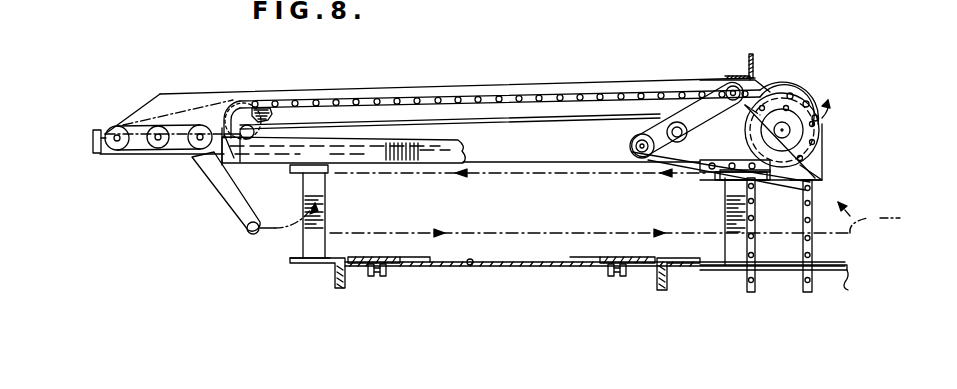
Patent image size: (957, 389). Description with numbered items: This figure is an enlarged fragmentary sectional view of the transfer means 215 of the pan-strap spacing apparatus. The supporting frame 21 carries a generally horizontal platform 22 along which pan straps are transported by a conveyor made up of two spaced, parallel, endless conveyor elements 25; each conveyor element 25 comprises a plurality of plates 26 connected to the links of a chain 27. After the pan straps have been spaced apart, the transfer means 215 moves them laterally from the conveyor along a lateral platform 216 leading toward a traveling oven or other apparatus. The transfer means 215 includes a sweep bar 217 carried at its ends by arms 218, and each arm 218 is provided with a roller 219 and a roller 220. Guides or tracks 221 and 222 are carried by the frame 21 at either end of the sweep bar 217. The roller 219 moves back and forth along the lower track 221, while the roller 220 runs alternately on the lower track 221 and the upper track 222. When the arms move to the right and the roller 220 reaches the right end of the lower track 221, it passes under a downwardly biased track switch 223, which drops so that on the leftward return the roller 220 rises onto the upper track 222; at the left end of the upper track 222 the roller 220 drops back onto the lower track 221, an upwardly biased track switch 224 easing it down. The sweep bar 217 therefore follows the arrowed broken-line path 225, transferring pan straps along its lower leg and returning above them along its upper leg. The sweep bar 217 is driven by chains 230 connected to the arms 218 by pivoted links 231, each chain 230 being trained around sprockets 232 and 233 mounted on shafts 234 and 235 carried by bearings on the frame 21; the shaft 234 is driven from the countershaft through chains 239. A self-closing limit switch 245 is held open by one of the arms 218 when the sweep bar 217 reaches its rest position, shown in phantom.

The frame 21 is at (655, 285).
The platform 22 is at (472, 268).
The conveyor element 25 is at (386, 258).
The plate 26 is at (402, 258).
The chain 27 is at (386, 280).
The transfer means 215 is at (818, 176).
The lateral platform 216 is at (838, 266).
The sweep bar 217 is at (822, 180).
The arm 218 is at (222, 205).
The roller 219 is at (120, 150).
The roller 220 is at (192, 150).
The track 221 is at (560, 160).
The track 222 is at (520, 112).
The track switch 223 is at (710, 172).
The track switch 224 is at (242, 128).
The path 225 is at (285, 232).
The chain 230 is at (592, 97).
The link 231 is at (196, 132).
The sprocket 232 is at (270, 118).
The sprocket 233 is at (830, 100).
The shaft 234 is at (246, 138).
The shaft 235 is at (836, 132).
The chain 239 is at (806, 284).
The limit switch 245 is at (93, 141).